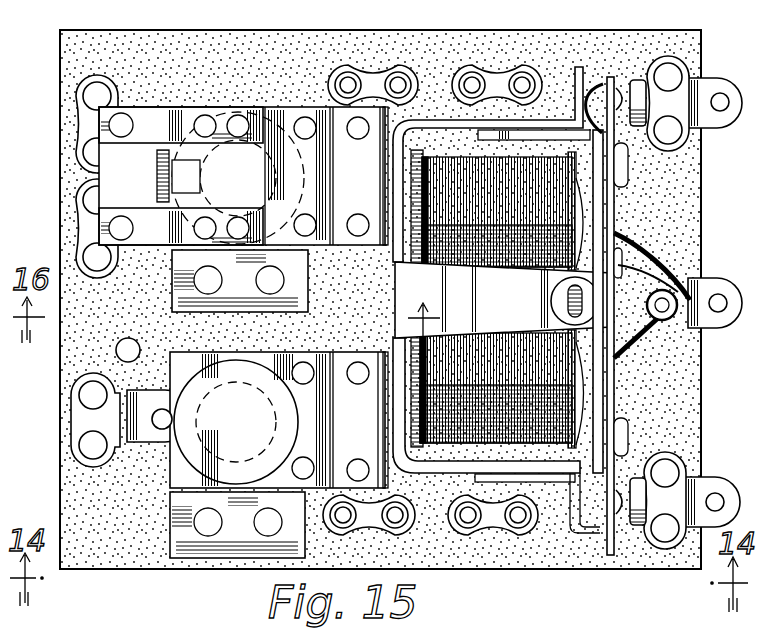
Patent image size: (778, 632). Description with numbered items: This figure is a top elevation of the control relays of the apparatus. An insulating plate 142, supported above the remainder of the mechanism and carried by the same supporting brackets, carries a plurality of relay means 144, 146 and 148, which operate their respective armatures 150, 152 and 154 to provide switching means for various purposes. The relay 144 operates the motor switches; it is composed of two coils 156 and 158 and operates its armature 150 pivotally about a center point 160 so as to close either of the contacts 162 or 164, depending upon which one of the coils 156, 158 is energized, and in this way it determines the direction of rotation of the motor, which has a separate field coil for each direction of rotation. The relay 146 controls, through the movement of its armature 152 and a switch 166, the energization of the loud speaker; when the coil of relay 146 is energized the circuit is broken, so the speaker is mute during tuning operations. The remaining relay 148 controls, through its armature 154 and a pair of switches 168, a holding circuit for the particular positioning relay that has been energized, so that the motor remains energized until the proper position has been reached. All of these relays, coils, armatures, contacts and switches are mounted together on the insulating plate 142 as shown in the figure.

The insulating plate 142 is at (683, 188).
The relay means 144 is at (432, 416).
The relay means 146 is at (272, 440).
The relay means 148 is at (264, 178).
The armature 150 is at (608, 383).
The armature 152 is at (225, 482).
The armature 154 is at (100, 117).
The coil 156 is at (507, 236).
The coil 158 is at (430, 396).
The center point 160 is at (567, 303).
The contact 162 is at (620, 513).
The contact 164 is at (630, 80).
The switch 166 is at (166, 422).
The pair of switches 168 is at (112, 215).